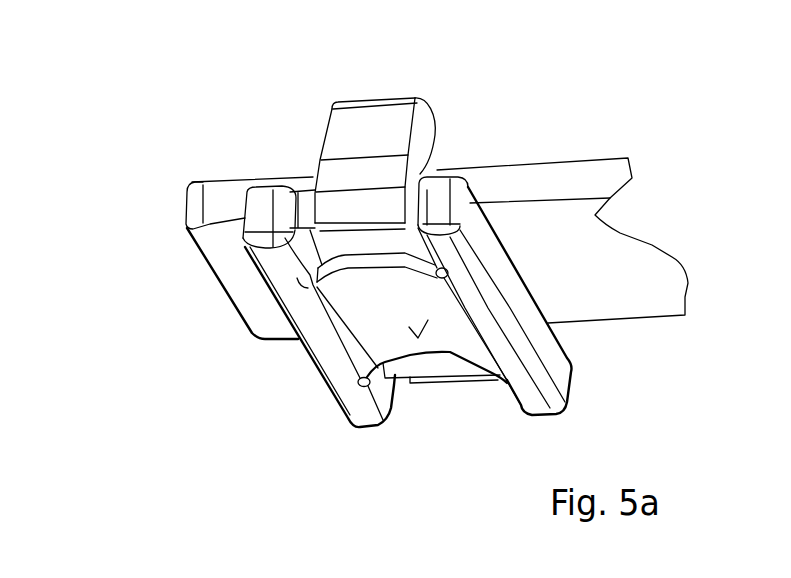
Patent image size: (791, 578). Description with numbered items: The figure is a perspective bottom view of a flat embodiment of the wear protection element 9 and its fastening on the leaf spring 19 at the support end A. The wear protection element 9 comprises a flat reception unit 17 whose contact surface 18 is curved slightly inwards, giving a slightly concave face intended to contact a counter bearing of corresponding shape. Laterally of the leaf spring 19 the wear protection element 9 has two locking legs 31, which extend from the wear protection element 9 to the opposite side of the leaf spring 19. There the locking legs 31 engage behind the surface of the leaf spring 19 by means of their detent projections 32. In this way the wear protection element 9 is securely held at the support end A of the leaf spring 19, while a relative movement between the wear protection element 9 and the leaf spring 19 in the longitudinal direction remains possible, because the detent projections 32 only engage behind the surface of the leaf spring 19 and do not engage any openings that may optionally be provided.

The wear protection element 9 is at (342, 362).
The flat reception unit 17 is at (437, 338).
The contact surface 18 is at (428, 320).
The leaf spring 19 is at (580, 230).
The locking legs 31 is at (373, 134).
The detent projections 32 is at (437, 141).
The support end A is at (176, 205).